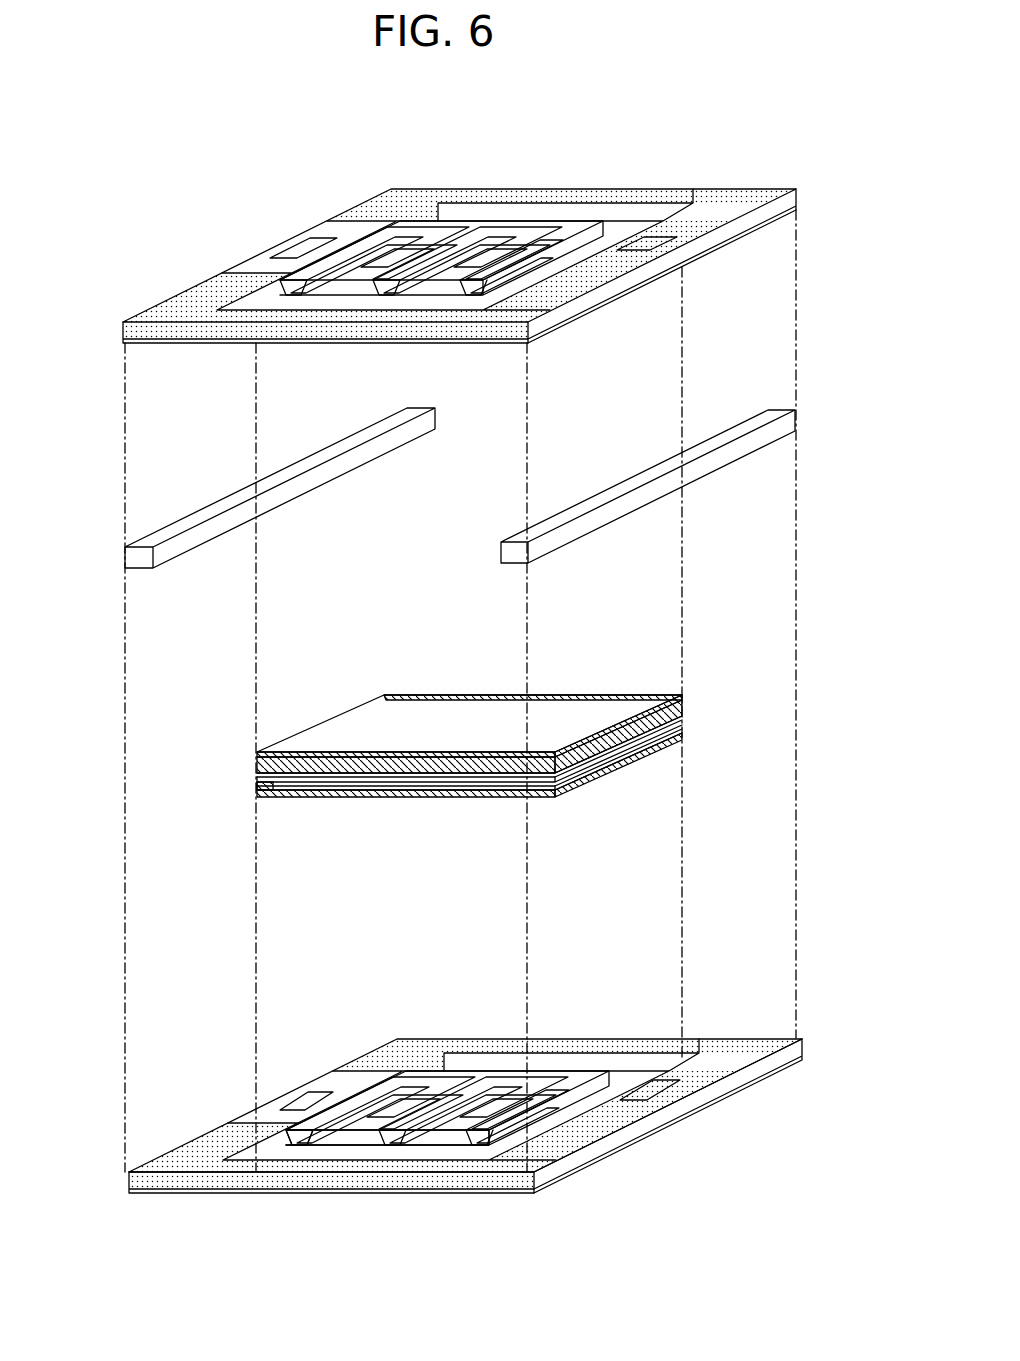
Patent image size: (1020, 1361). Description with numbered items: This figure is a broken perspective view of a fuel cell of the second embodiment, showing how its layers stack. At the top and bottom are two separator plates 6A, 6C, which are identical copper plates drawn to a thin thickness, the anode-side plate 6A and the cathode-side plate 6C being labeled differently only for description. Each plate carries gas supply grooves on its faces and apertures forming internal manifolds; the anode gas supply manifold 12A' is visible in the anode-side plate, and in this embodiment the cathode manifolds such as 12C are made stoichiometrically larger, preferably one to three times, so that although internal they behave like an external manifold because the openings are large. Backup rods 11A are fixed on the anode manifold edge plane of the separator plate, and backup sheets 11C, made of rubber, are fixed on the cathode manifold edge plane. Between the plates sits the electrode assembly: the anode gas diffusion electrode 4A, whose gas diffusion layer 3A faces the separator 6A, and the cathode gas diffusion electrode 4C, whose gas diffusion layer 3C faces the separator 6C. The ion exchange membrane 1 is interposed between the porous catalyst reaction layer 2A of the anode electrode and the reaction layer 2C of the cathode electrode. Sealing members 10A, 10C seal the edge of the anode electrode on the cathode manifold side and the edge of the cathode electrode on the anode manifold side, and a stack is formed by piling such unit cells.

The ion exchange membrane 1 is at (443, 780).
The reaction layer 2A is at (663, 748).
The reaction layer 2C is at (469, 800).
The gas diffusion layer 3A is at (512, 734).
The gas diffusion layer 3C is at (345, 794).
The gas diffusion electrode 4A is at (512, 750).
The gas diffusion electrode 4C is at (469, 818).
The separator plate 6A is at (733, 189).
The separator plate 6C is at (652, 1136).
The sealing member 10A is at (510, 775).
The sealing member 10C is at (607, 772).
The backup rods 11A is at (752, 426).
The backup sheets 11C is at (728, 1038).
The anode gas supply manifold 12A' is at (641, 301).
The cathode gas flow channel 12C is at (372, 1153).